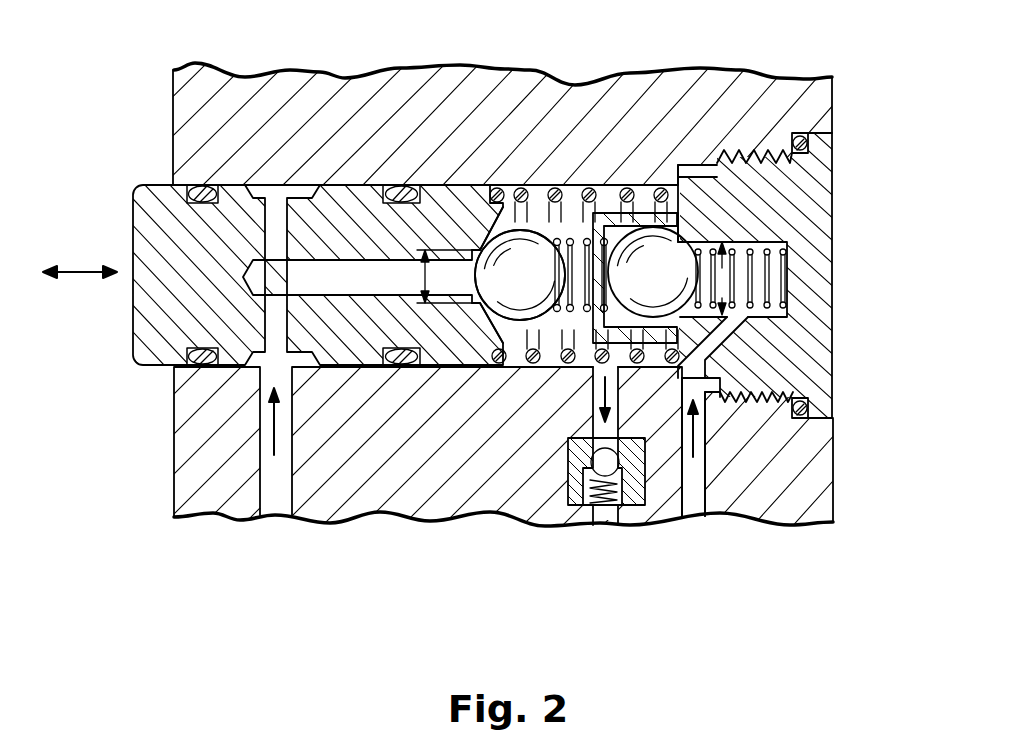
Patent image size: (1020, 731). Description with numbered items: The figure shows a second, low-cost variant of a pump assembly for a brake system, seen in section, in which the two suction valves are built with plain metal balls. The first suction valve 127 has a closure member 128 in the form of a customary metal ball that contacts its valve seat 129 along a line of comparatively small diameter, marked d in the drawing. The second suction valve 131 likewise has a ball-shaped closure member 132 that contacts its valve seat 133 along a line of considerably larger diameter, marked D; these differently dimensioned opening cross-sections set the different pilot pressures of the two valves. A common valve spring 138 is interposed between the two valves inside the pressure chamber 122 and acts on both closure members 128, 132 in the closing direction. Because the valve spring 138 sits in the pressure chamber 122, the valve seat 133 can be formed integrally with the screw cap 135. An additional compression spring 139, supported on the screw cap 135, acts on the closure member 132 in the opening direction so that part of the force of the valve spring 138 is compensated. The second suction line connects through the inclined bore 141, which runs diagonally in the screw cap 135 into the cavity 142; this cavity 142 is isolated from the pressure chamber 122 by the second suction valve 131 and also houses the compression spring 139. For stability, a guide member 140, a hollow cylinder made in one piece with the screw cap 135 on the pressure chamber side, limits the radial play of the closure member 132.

The pressure chamber 122 is at (572, 207).
The first suction valve 127 is at (471, 243).
The closure member 128 is at (543, 235).
The valve seat 129 is at (482, 300).
The second suction valve 131 is at (683, 223).
The closure member 132 is at (618, 217).
The valve seat 133 is at (687, 227).
The screw cap 135 is at (773, 362).
The valve spring 138 is at (546, 312).
The compression spring 139 is at (765, 280).
The guide member 140 is at (645, 215).
The inclined bore 141 is at (735, 327).
The cavity 142 is at (762, 247).